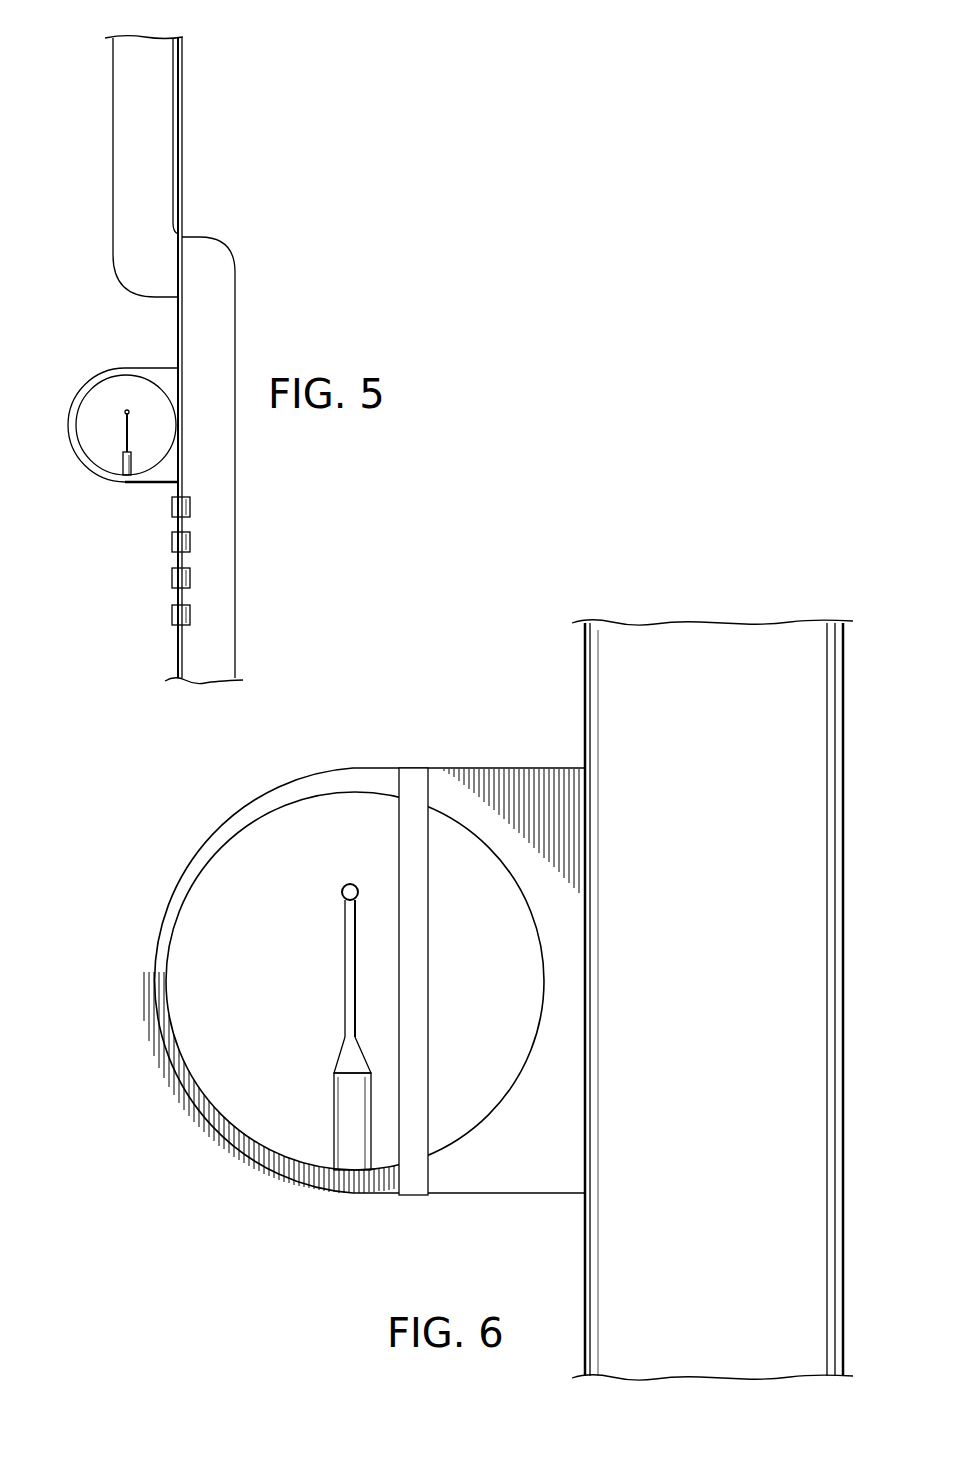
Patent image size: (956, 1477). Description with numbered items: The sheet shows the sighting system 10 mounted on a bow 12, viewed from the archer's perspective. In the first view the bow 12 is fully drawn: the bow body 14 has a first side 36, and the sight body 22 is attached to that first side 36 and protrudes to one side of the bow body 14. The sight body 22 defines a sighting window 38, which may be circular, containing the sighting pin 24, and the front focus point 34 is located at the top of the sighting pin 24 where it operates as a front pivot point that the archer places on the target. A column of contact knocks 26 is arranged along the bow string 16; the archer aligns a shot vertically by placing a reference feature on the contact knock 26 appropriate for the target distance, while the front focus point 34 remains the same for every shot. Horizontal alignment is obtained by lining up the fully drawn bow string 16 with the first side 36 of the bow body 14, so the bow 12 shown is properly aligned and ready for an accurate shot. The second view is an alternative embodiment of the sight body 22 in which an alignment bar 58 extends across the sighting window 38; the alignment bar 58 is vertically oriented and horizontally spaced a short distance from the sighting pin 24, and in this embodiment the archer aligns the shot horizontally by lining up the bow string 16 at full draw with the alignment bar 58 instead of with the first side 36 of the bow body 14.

In FIG. 5, the sighting system 10 is at (84, 531).
In FIG. 6, the sighting system 10 is at (448, 672).
In FIG. 5, the bow 12 is at (201, 360).
In FIG. 6, the bow 12 is at (701, 973).
In FIG. 5, the bow body 14 is at (235, 262).
In FIG. 6, the bow body 14 is at (823, 705).
In FIG. 5, the bow string 16 is at (182, 188).
In FIG. 5, the sight body 22 is at (98, 433).
In FIG. 6, the sight body 22 is at (364, 955).
In FIG. 5, the sighting pin 24 is at (122, 466).
In FIG. 6, the sighting pin 24 is at (340, 1058).
In FIG. 5, the contact knocks 26 is at (172, 507).
In FIG. 5, the front focus point 34 is at (131, 412).
In FIG. 6, the front focus point 34 is at (350, 885).
In FIG. 5, the first side 36 is at (178, 315).
In FIG. 6, the first side 36 is at (585, 1275).
In FIG. 5, the sighting window 38 is at (117, 431).
In FIG. 6, the sighting window 38 is at (266, 996).
In FIG. 6, the alignment bar 58 is at (429, 985).